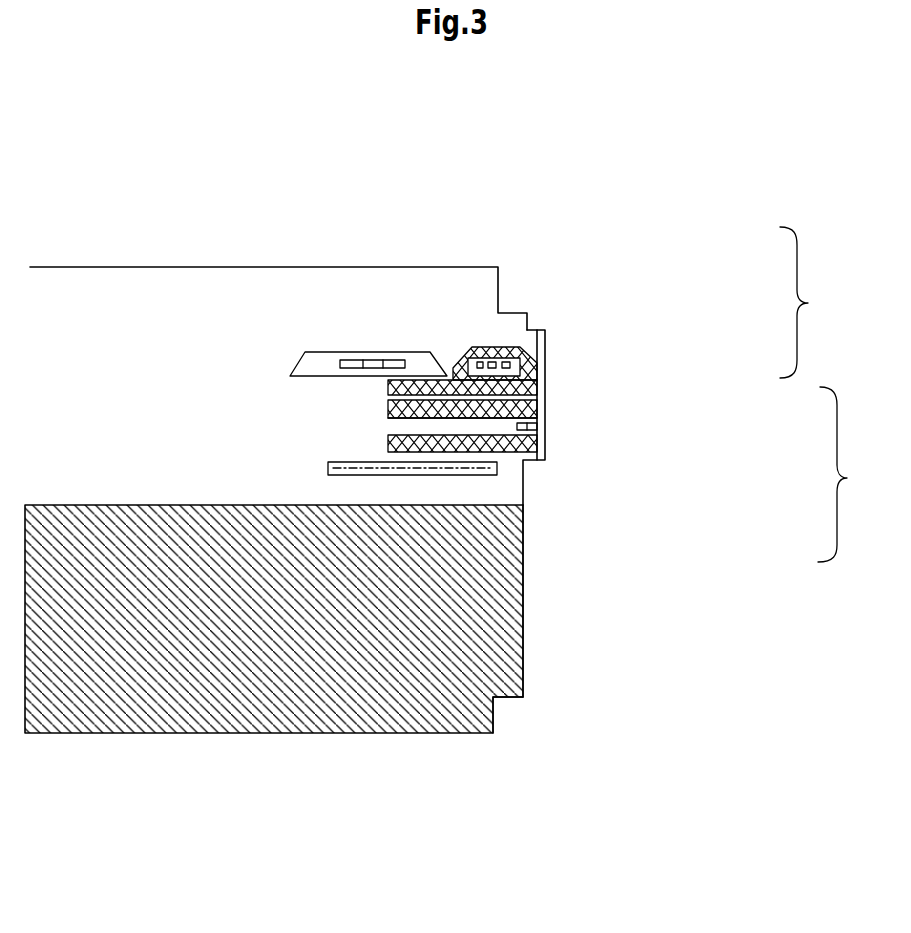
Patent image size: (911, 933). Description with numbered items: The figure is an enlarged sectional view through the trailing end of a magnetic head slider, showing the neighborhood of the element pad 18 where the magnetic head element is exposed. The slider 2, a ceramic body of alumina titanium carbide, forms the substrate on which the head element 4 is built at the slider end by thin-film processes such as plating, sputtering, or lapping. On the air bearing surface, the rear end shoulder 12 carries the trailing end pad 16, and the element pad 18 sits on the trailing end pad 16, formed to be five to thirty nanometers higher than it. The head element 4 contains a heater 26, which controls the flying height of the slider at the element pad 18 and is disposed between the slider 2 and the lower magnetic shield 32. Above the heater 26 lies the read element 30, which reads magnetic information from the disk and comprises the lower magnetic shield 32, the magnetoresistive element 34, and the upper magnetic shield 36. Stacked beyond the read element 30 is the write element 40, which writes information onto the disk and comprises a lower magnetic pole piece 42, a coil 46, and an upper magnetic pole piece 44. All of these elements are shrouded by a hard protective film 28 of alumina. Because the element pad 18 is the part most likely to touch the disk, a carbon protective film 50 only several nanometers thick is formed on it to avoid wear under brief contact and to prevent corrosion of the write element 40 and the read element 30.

The slider 2 is at (362, 702).
The head element 4 is at (387, 267).
The rear end shoulder 12 is at (495, 730).
The trailing end pad 16 is at (525, 555).
The element pad 18 is at (547, 330).
The heater 26 is at (328, 463).
The hard protective film 28 is at (127, 298).
The read element 30 is at (632, 474).
The lower magnetic shield 32 is at (547, 442).
The magnetoresistive element 34 is at (547, 423).
The upper magnetic shield 36 is at (547, 407).
The write element 40 is at (612, 322).
The lower magnetic pole piece 42 is at (547, 380).
The upper magnetic pole piece 44 is at (547, 357).
The coil 46 is at (547, 336).
The carbon protective film 50 is at (547, 395).